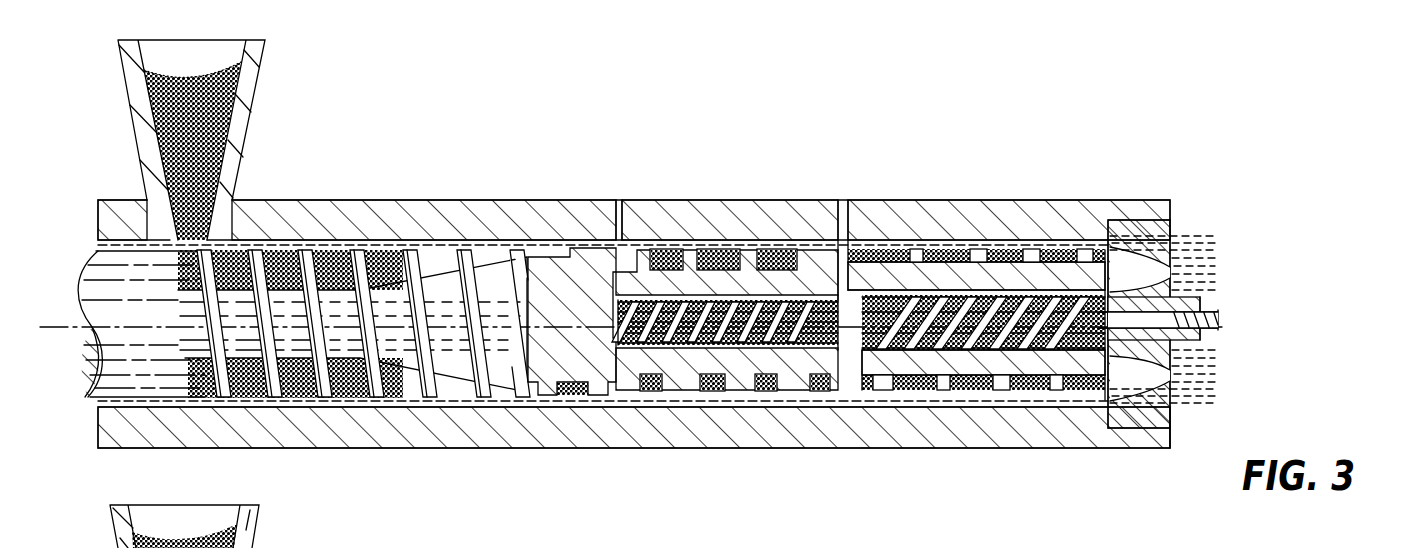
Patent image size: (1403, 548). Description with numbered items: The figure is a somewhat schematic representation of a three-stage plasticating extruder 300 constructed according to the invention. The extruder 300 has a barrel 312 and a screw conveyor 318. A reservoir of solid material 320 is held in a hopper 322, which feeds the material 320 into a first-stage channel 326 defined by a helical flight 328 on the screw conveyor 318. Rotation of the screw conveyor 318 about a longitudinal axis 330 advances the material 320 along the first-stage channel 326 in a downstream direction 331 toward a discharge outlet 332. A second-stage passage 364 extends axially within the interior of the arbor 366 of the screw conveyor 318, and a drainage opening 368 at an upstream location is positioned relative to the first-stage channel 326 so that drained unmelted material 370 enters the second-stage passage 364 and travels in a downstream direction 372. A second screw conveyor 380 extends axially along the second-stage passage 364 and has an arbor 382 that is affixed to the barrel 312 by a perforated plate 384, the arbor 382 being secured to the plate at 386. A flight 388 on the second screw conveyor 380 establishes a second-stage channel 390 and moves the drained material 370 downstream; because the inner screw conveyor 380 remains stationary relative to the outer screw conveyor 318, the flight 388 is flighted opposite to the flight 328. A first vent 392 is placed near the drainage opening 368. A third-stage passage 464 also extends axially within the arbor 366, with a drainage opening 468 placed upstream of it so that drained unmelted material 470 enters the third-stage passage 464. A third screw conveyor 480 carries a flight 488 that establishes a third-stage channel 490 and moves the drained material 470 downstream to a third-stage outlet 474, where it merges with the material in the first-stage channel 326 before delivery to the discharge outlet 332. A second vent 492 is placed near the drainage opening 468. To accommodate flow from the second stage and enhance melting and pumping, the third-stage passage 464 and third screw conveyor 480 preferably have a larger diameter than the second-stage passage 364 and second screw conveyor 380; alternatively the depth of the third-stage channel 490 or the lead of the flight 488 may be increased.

The three-stage extruder 300 is at (390, 198).
The barrel 312 is at (457, 200).
The screw conveyor 318 is at (1002, 243).
The solid material 320 is at (215, 125).
The hopper 322 is at (250, 85).
The first-stage channel 326 is at (228, 252).
The helical flight 328 is at (262, 252).
The longitudinal axis 330 is at (55, 330).
The downstream direction 331 is at (680, 186).
The discharge outlet 332 is at (1172, 262).
The second-stage passage 364 is at (786, 292).
The arbor 366 is at (792, 266).
The drainage opening 368 is at (640, 245).
The drained unmelted material 370 is at (640, 245).
The downstream direction 372 is at (705, 399).
The second screw conveyor 380 is at (782, 330).
The arbor 382 is at (792, 356).
The perforated plate 384 is at (1165, 420).
The securing location 386 is at (1192, 346).
The flight 388 is at (748, 348).
The second-stage channel 390 is at (802, 345).
The first vent 392 is at (618, 205).
The third-stage passage 464 is at (930, 352).
The drainage opening 468 is at (849, 290).
The drained unmelted material 470 is at (868, 258).
The third-stage outlet 474 is at (1172, 290).
The third screw conveyor 480 is at (1014, 354).
The flight 488 is at (1045, 338).
The third-stage channel 490 is at (1088, 342).
The second vent 492 is at (840, 262).